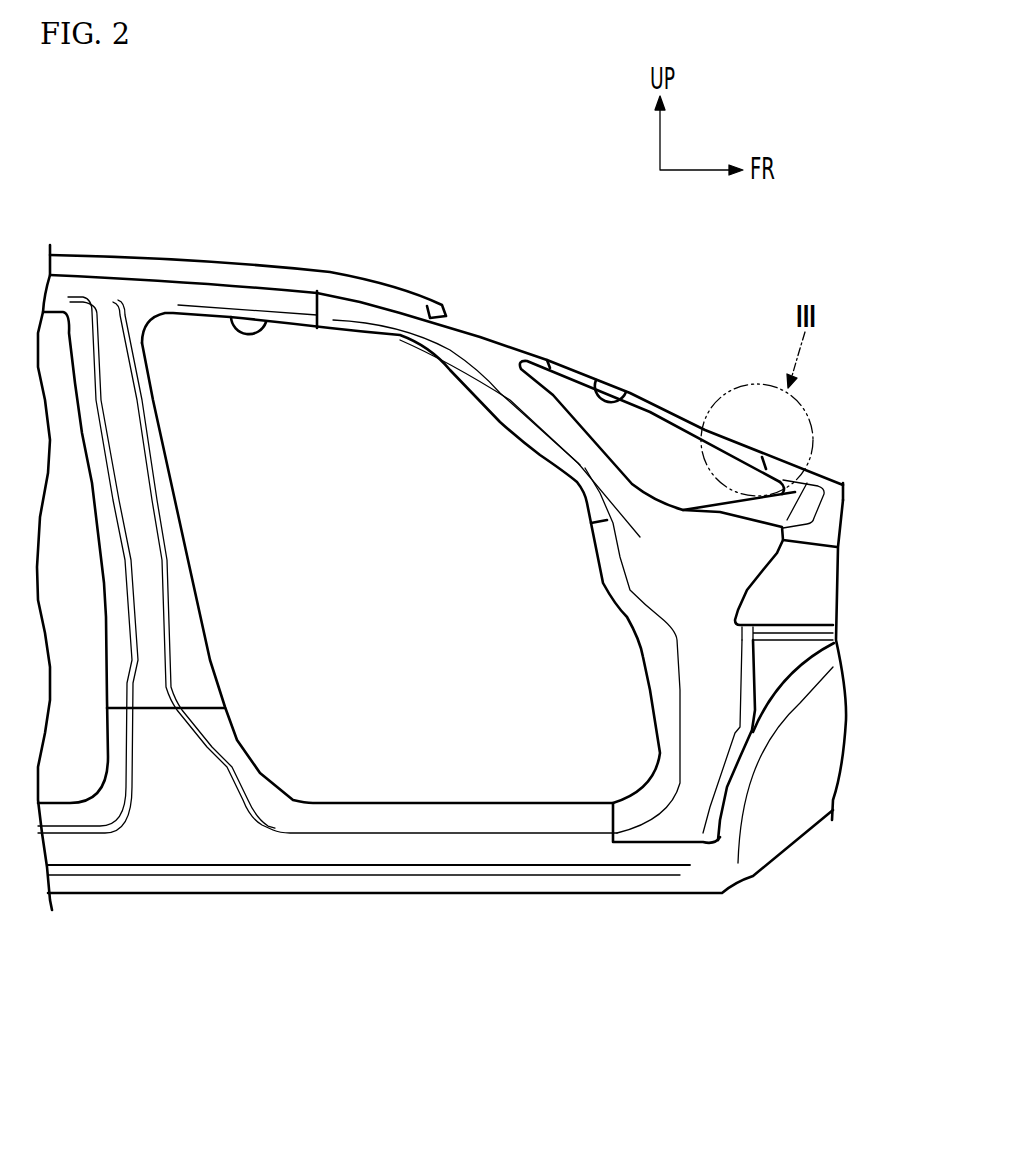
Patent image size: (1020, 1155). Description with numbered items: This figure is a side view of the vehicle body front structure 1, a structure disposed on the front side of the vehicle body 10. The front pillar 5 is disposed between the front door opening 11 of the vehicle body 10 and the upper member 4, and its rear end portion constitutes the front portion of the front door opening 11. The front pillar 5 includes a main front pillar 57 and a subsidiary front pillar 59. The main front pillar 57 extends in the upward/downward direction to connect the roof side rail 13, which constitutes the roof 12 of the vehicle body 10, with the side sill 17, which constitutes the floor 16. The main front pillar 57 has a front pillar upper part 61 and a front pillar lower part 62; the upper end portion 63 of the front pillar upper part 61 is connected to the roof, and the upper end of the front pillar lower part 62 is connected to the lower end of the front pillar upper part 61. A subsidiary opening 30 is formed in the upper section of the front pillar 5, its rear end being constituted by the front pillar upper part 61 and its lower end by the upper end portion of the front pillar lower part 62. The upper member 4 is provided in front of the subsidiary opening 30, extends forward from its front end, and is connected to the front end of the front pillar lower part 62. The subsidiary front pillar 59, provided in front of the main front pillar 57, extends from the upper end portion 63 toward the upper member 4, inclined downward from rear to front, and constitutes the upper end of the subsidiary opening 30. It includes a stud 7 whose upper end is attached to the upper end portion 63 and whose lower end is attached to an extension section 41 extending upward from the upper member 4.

The vehicle body front structure 1 is at (678, 349).
The upper member 4 is at (817, 573).
The front pillar 5 is at (497, 320).
The stud 7 is at (660, 412).
The vehicle body 10 is at (355, 240).
The front door opening 11 is at (233, 318).
The roof 12 is at (100, 252).
The roof side rail 13 is at (182, 290).
The floor 16 is at (278, 894).
The side sill 17 is at (372, 858).
The subsidiary opening 30 is at (600, 380).
The extension section 41 is at (807, 483).
The main front pillar 57 is at (587, 538).
The subsidiary front pillar 59 is at (627, 368).
The front pillar upper part 61 is at (513, 398).
The front pillar lower part 62 is at (663, 595).
The upper end portion 63 is at (483, 340).